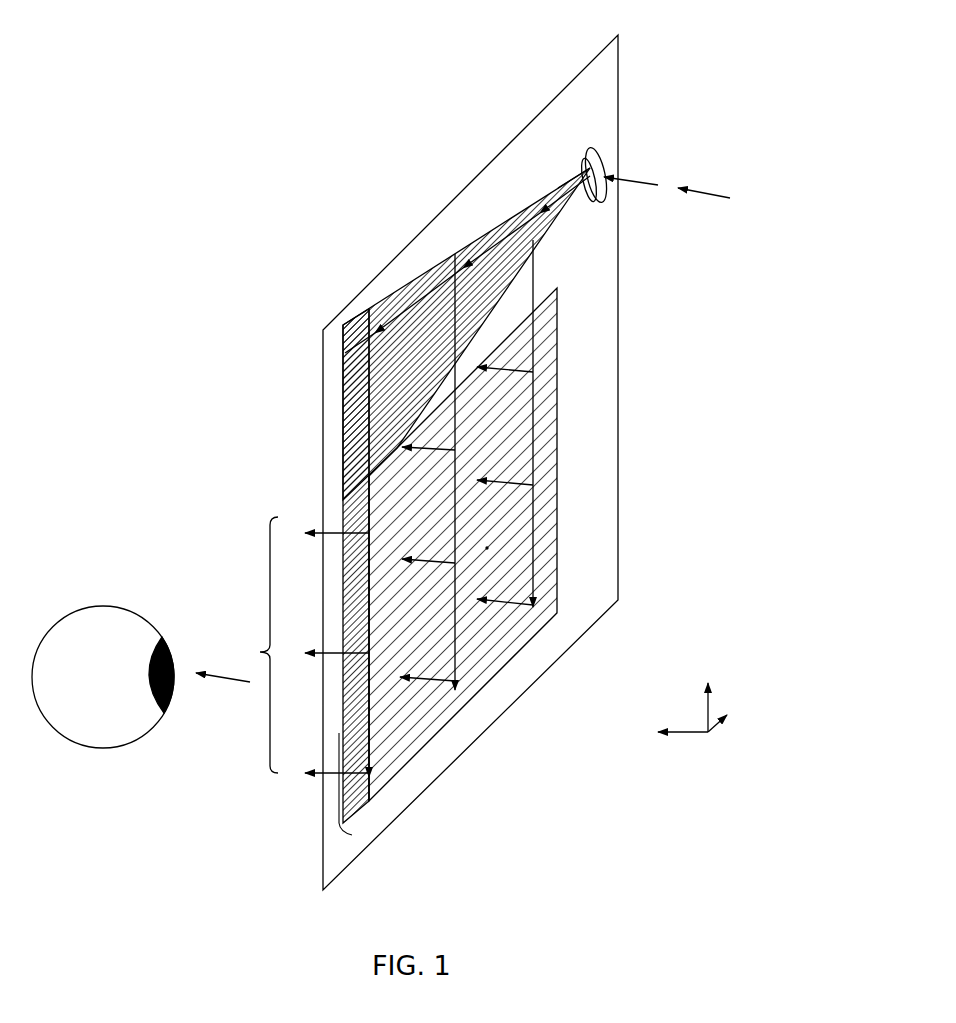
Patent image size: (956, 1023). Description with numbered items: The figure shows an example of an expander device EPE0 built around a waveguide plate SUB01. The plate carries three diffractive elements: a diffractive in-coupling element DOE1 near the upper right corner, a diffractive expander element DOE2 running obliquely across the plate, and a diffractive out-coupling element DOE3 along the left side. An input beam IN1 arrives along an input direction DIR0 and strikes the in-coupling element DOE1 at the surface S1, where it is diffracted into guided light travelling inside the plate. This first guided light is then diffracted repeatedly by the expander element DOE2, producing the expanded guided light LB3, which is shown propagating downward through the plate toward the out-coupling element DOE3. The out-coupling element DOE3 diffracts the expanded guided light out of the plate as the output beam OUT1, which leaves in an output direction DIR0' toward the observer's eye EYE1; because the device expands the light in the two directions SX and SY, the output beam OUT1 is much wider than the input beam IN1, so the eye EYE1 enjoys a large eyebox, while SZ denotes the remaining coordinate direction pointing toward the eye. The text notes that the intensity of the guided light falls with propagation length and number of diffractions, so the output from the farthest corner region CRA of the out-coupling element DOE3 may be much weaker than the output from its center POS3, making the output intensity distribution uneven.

The expander device EPE0 is at (418, 462).
The waveguide plate SUB01 is at (490, 165).
The diffractive in-coupling element DOE1 is at (595, 146).
The diffractive expander element DOE2 is at (400, 288).
The diffractive out-coupling element DOE3 is at (347, 507).
The expanded guided light LB3 is at (348, 413).
The surface of the substrate S1 is at (552, 182).
The input beam IN1 is at (633, 177).
The direction of input beam DIR0 is at (704, 217).
The output beam OUT1 is at (283, 645).
The direction of output beams DIR0' is at (223, 701).
The eye EYE1 is at (103, 603).
The corner region CRA is at (337, 797).
The center of the diffractive out-coupling element POS3 is at (487, 548).
The direction SX is at (733, 714).
The direction SY is at (709, 695).
The z-axis direction SZ is at (666, 736).